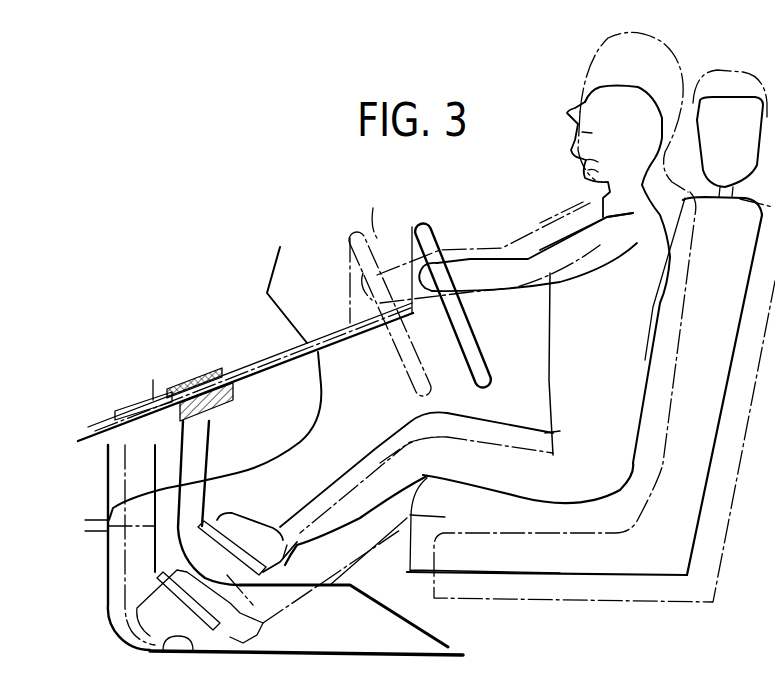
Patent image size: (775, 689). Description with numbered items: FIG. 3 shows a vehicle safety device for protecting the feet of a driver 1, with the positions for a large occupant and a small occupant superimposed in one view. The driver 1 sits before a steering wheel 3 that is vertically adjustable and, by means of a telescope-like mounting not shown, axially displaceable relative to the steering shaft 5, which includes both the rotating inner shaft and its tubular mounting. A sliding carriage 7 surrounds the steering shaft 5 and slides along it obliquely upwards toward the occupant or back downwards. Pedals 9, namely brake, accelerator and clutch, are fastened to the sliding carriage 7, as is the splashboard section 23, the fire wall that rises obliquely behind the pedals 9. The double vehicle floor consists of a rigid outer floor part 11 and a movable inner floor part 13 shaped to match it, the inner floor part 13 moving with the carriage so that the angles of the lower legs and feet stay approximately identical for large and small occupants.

The driver 1 is at (560, 330).
The steering wheel 3 is at (416, 228).
The steering shaft 5 is at (262, 362).
The sliding carriage 7 is at (177, 393).
The pedals 9 is at (122, 623).
The outer floor part 11 is at (158, 647).
The inner floor part 13 is at (413, 622).
The splashboard section 23 is at (103, 552).